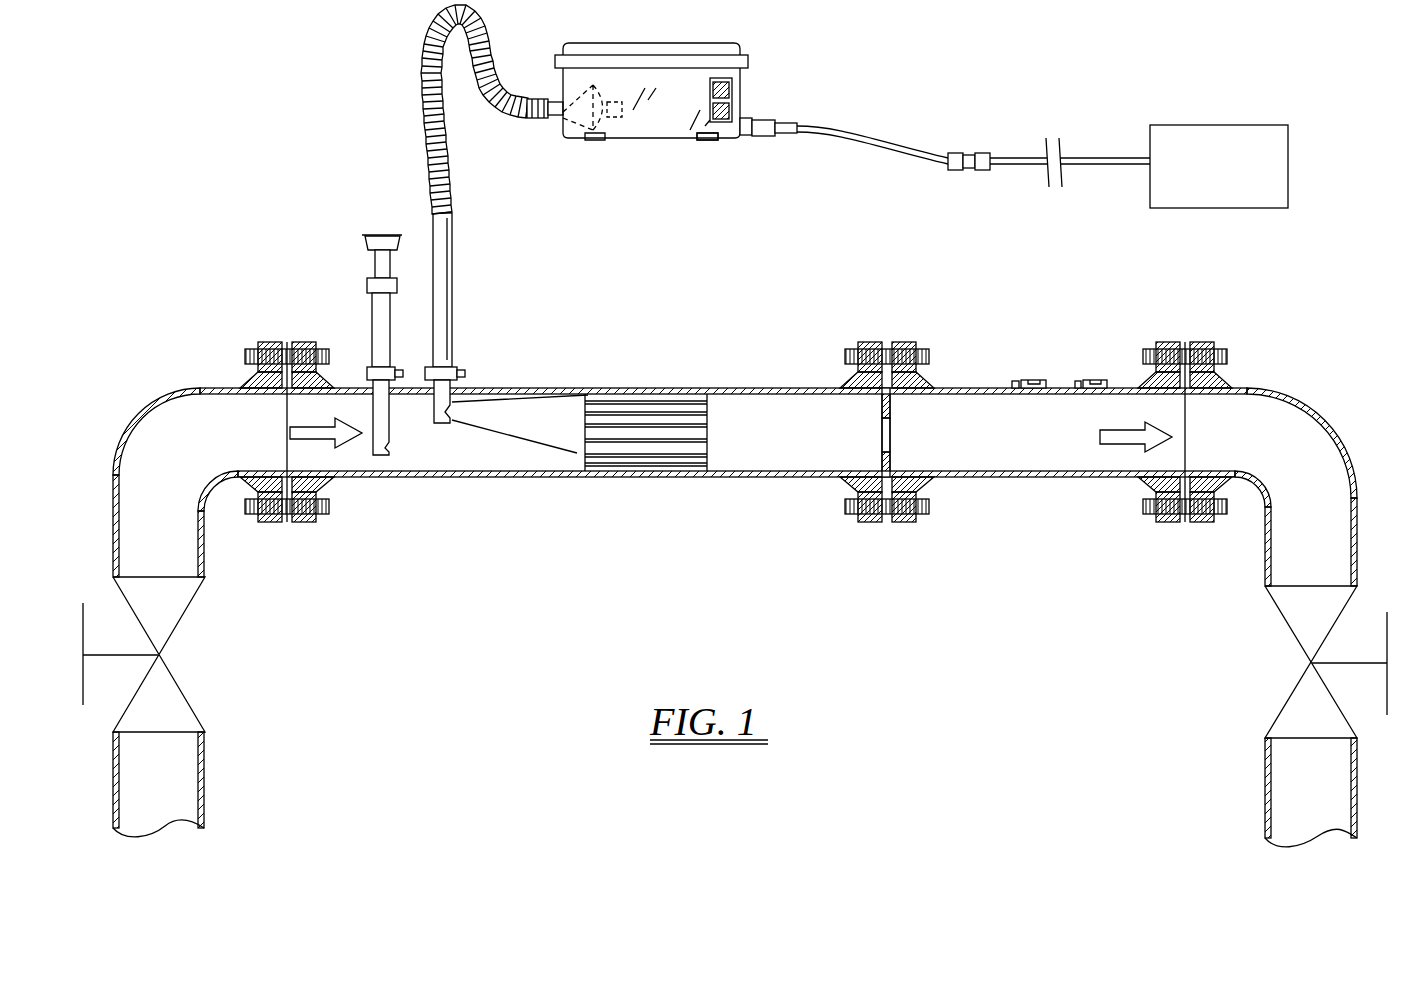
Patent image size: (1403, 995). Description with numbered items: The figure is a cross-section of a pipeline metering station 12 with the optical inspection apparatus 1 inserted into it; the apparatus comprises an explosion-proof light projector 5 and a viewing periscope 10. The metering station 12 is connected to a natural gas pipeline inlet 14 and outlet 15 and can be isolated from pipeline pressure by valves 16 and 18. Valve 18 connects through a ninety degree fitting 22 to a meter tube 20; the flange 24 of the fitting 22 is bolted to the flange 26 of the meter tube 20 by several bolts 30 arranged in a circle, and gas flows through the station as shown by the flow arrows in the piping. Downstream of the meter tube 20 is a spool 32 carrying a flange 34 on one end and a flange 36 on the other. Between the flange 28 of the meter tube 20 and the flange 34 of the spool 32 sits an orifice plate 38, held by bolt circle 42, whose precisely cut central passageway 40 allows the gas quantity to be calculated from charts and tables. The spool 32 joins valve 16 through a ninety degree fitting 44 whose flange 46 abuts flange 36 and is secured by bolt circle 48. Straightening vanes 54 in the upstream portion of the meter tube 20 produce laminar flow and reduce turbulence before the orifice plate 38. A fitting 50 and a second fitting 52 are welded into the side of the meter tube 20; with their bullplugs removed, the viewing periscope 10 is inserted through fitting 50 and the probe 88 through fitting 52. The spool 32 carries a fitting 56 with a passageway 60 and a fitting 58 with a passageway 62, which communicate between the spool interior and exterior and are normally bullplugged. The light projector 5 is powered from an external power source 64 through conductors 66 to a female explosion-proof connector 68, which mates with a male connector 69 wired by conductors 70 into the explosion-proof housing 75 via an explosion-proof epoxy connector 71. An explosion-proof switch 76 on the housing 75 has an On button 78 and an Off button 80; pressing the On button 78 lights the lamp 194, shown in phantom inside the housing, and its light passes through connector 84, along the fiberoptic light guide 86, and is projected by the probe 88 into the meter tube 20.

The optical inspection apparatus 1 is at (296, 133).
The explosion-proof light projector 5 is at (576, 225).
The viewing periscope 10 is at (317, 253).
The metering station 12 is at (723, 587).
The natural gas pipeline inlet 14 is at (205, 779).
The natural gas pipeline outlet 15 is at (1265, 797).
The valve 16 is at (1300, 648).
The valve 18 is at (167, 643).
The meter tube 20 is at (488, 477).
The 90 degree fitting 22 is at (140, 435).
The flange 24 is at (272, 342).
The flange 26 is at (302, 342).
The flange 28 is at (866, 522).
The bolts 30 is at (245, 354).
The spool 32 is at (1022, 477).
The flange 34 is at (906, 522).
The flange 36 is at (1168, 522).
The orifice plate 38 is at (890, 400).
The passageway 40 is at (883, 436).
The bolt circle 42 is at (887, 349).
The 90 degree fitting 44 is at (1320, 425).
The flange 46 is at (1203, 522).
The bolt circle 48 is at (1185, 349).
The fitting 50 is at (368, 385).
The second fitting 52 is at (460, 380).
The straightening vanes 54 is at (668, 437).
The fitting 56 is at (1013, 382).
The fitting 58 is at (1100, 382).
The passageway 60 is at (1033, 380).
The passageway 62 is at (1079, 382).
The external power source 64 is at (1290, 183).
The conductors 66 is at (1106, 158).
The female explosion-proof connector 68 is at (985, 153).
The male explosion-proof connector 69 is at (955, 153).
The conductors 70 is at (862, 138).
The explosion-proof epoxy connector 71 is at (755, 133).
The explosion-proof housing 75 is at (643, 135).
The explosion-proof switch 76 is at (722, 128).
The On button 78 is at (733, 106).
The Off button 80 is at (733, 88).
The connector 84 is at (540, 117).
The fiberoptic light guide 86 is at (425, 95).
The probe 88 is at (445, 267).
The lamp 194 is at (592, 126).